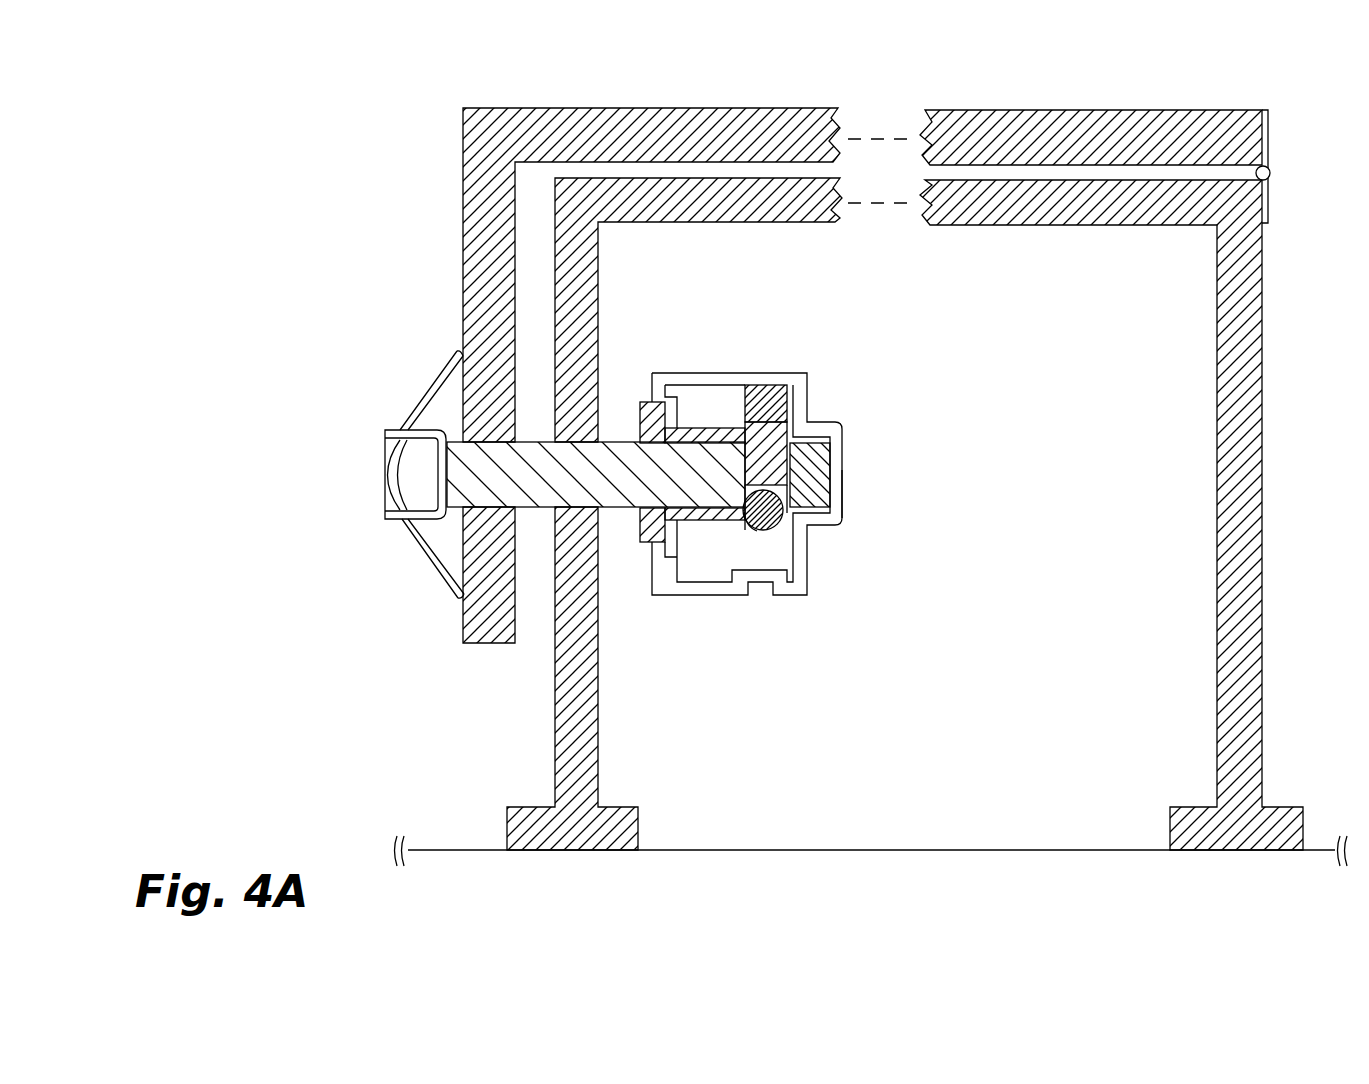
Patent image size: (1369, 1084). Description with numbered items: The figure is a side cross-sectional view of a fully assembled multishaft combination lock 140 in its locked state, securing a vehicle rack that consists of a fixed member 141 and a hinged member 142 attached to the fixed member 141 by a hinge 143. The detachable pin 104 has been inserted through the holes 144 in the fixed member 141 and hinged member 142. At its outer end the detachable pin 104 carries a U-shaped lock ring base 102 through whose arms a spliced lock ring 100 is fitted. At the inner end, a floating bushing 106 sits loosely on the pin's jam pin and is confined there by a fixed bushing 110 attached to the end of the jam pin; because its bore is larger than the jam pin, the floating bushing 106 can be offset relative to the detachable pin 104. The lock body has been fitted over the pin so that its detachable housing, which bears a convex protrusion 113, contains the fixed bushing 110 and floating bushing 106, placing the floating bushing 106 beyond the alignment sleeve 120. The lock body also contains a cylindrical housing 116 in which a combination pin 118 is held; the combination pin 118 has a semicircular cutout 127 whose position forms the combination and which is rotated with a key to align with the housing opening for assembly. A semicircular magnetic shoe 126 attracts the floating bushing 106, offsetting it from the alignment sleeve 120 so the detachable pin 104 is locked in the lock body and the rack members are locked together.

The lock ring 100 is at (430, 558).
The lock ring base 102 is at (397, 430).
The detachable pin 104 is at (617, 440).
The floating bushing 106 is at (778, 427).
The fixed bushing 110 is at (817, 480).
The convex protrusion 113 is at (838, 512).
The cylindrical housing 116 is at (782, 527).
The combination pin 118 is at (785, 512).
The alignment sleeve 120 is at (640, 545).
The magnetic shoe 126 is at (766, 383).
The semicircular cutout 127 is at (758, 518).
The multishaft combination lock 140 is at (783, 308).
The fixed member 141 is at (553, 776).
The hinged member 142 is at (688, 108).
The hinge 143 is at (1271, 173).
The holes 144 is at (525, 432).